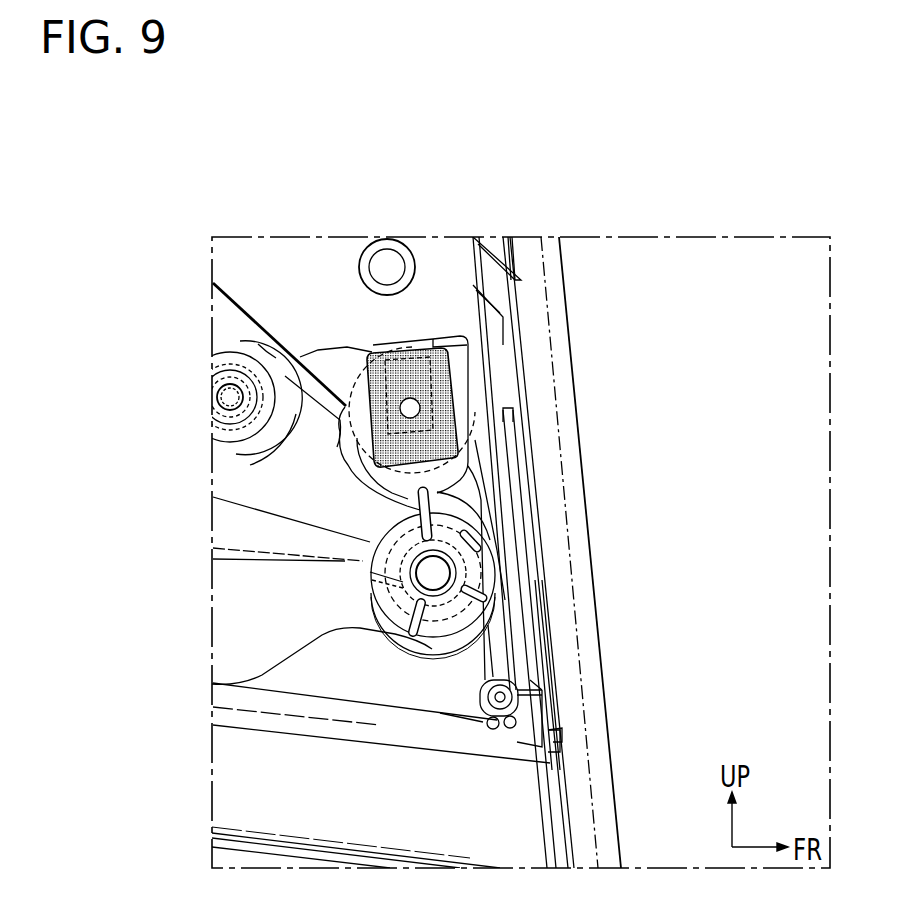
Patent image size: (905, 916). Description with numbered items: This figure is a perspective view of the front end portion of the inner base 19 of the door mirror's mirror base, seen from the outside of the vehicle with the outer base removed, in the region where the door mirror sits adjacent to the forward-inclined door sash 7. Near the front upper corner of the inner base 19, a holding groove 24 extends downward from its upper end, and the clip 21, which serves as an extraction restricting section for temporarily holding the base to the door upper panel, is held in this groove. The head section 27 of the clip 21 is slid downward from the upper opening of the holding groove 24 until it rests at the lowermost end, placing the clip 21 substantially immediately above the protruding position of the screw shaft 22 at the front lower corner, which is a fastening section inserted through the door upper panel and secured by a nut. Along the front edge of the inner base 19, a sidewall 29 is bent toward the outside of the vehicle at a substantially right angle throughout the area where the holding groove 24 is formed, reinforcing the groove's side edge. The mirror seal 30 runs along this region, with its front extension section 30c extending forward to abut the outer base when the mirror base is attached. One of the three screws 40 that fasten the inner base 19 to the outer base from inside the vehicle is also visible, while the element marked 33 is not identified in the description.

The door sash 7 is at (578, 302).
The inner base 19 is at (246, 302).
The clip 21 is at (462, 362).
The screw shaft 22 is at (440, 572).
The holding groove 24 is at (411, 400).
The head section 27 is at (450, 430).
The sidewall 29 is at (468, 415).
The mirror seal 30 is at (332, 262).
The front extension section 30c is at (507, 510).
The reinforcing strip 33 is at (517, 477).
The screw 40 is at (222, 387).